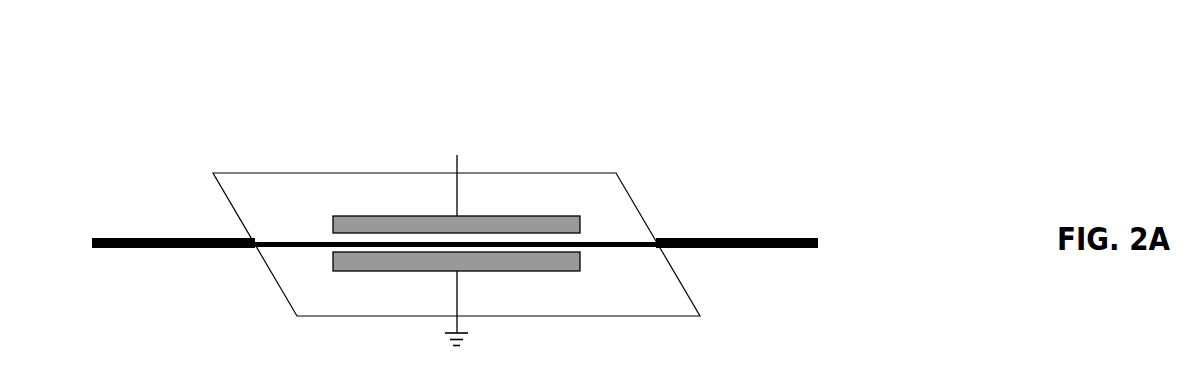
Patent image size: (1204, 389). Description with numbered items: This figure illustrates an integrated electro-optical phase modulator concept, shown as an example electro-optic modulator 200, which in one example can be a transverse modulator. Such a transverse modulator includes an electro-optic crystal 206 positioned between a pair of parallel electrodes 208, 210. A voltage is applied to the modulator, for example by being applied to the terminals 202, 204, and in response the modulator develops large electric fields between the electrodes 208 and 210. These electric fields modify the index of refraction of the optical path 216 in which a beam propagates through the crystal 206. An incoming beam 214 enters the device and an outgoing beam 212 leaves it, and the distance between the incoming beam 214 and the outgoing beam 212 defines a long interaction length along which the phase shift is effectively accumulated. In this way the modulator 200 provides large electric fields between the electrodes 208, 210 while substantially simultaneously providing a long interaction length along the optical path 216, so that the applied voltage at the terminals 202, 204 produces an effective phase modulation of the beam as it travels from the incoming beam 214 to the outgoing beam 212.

The electro-optic modulator 200 is at (730, 92).
The terminal 202 is at (463, 128).
The terminal 204 is at (463, 333).
The electro-optic crystal 206 is at (619, 173).
The electrode 208 is at (580, 216).
The electrode 210 is at (580, 265).
The outgoing beam 212 is at (790, 235).
The incoming beam 214 is at (142, 248).
The optical path 216 is at (262, 248).